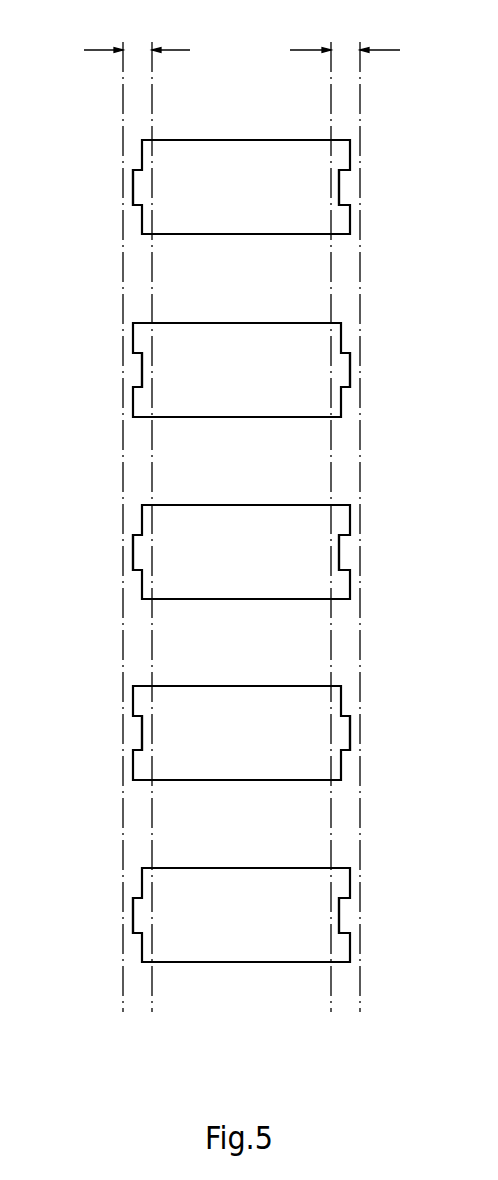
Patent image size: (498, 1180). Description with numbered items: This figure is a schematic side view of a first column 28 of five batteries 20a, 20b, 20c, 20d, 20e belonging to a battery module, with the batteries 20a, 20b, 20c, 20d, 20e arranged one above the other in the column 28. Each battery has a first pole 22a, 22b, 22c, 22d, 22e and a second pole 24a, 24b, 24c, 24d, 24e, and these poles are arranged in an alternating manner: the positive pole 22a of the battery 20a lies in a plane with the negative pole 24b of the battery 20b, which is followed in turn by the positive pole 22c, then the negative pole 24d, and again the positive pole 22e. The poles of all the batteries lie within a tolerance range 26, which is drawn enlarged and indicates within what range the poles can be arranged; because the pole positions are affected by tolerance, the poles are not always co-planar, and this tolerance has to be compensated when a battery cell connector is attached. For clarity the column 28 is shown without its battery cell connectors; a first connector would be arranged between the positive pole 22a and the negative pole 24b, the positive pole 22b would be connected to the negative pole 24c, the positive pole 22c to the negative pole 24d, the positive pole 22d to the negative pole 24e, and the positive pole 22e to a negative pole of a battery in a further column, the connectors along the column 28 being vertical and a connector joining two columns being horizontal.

The battery 20a is at (221, 199).
The battery 20b is at (221, 382).
The battery 20c is at (221, 564).
The battery 20d is at (221, 745).
The battery 20e is at (221, 927).
The first pole 22a is at (133, 189).
The first pole 22b is at (345, 371).
The first pole 22c is at (133, 554).
The first pole 22d is at (345, 734).
The first pole 22e is at (133, 917).
The second pole 24a is at (342, 188).
The second pole 24b is at (138, 369).
The second pole 24c is at (342, 553).
The second pole 24d is at (138, 732).
The second pole 24e is at (342, 916).
The tolerance range 26 is at (242, 34).
The first column 28 is at (198, 1020).